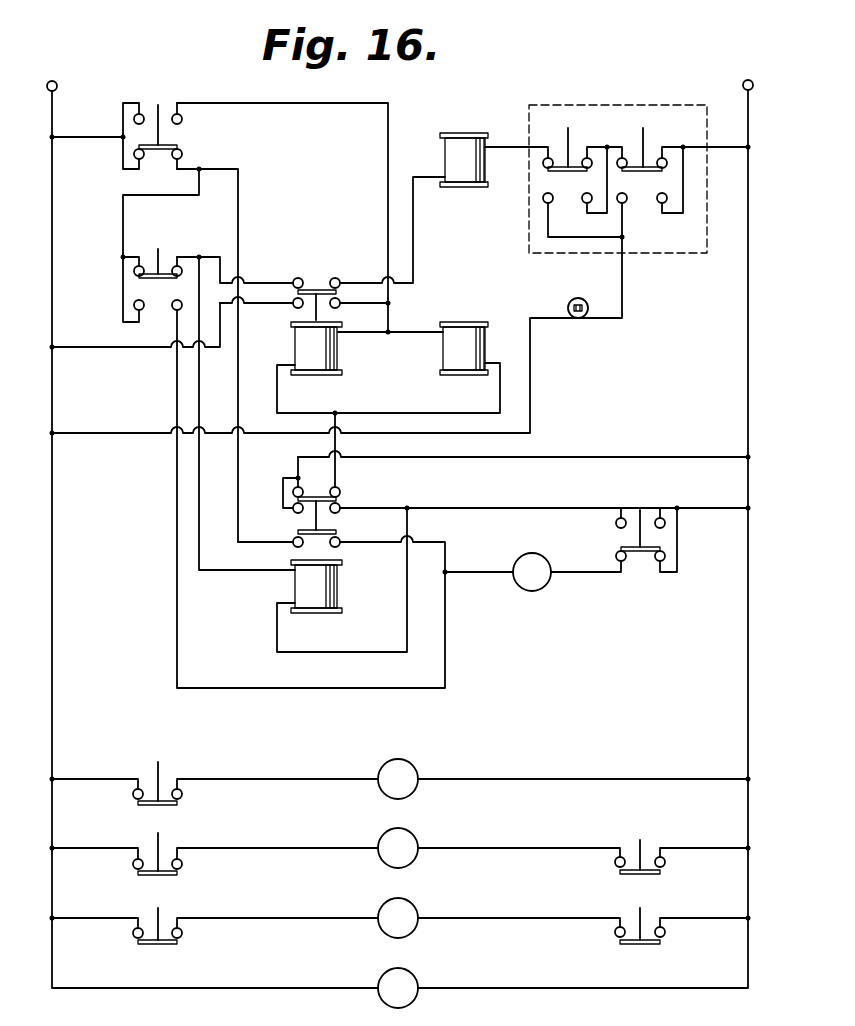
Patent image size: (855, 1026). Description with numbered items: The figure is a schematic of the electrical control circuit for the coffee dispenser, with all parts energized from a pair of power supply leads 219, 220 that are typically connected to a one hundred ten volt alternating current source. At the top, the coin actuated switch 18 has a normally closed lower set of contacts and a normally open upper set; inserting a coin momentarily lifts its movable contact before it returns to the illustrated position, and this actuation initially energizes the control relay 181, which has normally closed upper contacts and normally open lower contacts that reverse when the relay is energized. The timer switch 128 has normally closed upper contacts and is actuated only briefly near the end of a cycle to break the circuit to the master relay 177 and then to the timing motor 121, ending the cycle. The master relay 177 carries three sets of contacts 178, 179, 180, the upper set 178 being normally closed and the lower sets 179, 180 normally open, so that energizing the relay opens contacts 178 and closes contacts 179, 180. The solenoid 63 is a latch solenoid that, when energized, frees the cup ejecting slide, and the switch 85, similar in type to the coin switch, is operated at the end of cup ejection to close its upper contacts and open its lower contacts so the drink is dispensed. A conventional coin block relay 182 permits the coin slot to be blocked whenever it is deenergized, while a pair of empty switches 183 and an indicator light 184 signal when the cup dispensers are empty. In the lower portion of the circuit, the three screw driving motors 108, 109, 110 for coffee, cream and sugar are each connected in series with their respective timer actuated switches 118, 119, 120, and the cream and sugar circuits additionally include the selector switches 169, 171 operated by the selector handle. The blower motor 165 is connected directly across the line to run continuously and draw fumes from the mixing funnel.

The power supply lead 219 is at (56, 76).
The power supply lead 220 is at (750, 75).
The coin actuated switch 18 is at (150, 158).
The timer switch 128 is at (143, 283).
The control relay 181 is at (338, 354).
The solenoid 63 is at (443, 352).
The coin block relay 182 is at (470, 123).
The empty switches 183 is at (630, 165).
The indicator light 184 is at (580, 318).
The upper set of contacts of master relay 178 is at (339, 490).
The set of contacts of master relay 179 is at (339, 506).
The set of contacts of master relay 180 is at (339, 540).
The master relay 177 is at (338, 584).
The timing motor 121 is at (541, 586).
The electric switch 85 is at (641, 561).
The cam operated electric switch 118 is at (170, 778).
The cam operated electric switch 119 is at (170, 848).
The cam operated electric switch 120 is at (170, 918).
The screw driving motor 108 is at (416, 768).
The screw driving motor 109 is at (416, 837).
The screw driving motor 110 is at (416, 907).
The blower motor 165 is at (416, 977).
The selector switch 169 is at (645, 875).
The selector switch 171 is at (645, 945).